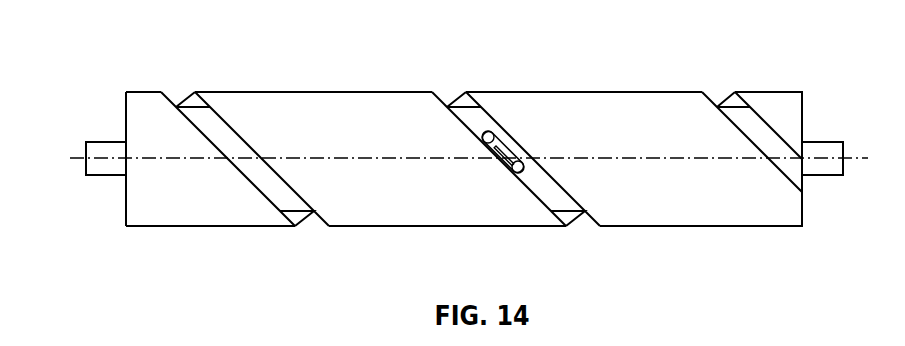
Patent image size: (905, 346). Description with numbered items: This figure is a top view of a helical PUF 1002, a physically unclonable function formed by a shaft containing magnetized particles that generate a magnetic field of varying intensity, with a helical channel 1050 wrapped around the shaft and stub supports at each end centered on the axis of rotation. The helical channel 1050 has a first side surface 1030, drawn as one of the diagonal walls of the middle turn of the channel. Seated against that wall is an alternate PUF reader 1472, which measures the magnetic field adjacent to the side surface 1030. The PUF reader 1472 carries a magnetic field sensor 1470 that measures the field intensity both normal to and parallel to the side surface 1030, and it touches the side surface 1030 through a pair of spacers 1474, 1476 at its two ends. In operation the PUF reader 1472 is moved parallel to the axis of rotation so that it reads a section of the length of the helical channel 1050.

The helical PUF 1002 is at (140, 40).
The helical channel 1050 is at (498, 130).
The first side surface 1030 is at (542, 203).
The magnetic field sensor 1470 is at (472, 155).
The PUF reader 1472 is at (502, 146).
The spacer 1474 is at (482, 138).
The spacer 1476 is at (523, 177).